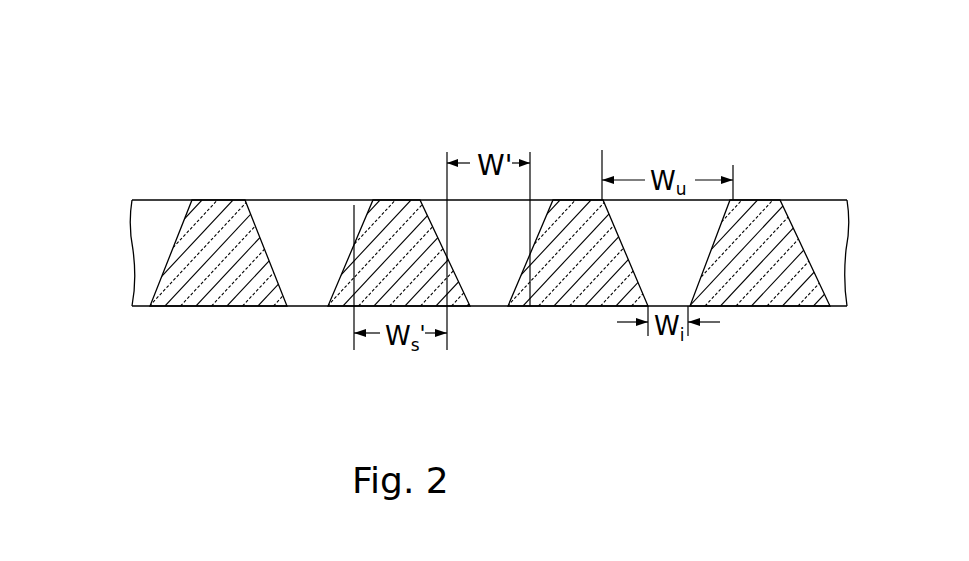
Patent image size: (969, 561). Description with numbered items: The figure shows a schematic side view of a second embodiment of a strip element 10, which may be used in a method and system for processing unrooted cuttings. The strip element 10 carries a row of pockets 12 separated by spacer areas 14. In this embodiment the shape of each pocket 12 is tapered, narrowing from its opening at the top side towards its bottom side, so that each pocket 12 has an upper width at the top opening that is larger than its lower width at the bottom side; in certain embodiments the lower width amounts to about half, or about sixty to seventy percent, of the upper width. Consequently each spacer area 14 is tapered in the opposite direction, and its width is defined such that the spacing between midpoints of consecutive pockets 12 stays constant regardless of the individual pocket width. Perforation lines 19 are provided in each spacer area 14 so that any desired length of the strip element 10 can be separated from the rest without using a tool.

The strip element 10 is at (232, 148).
The pocket 12 is at (324, 261).
The spacer area 14 is at (200, 287).
The perforation line 19 is at (400, 228).